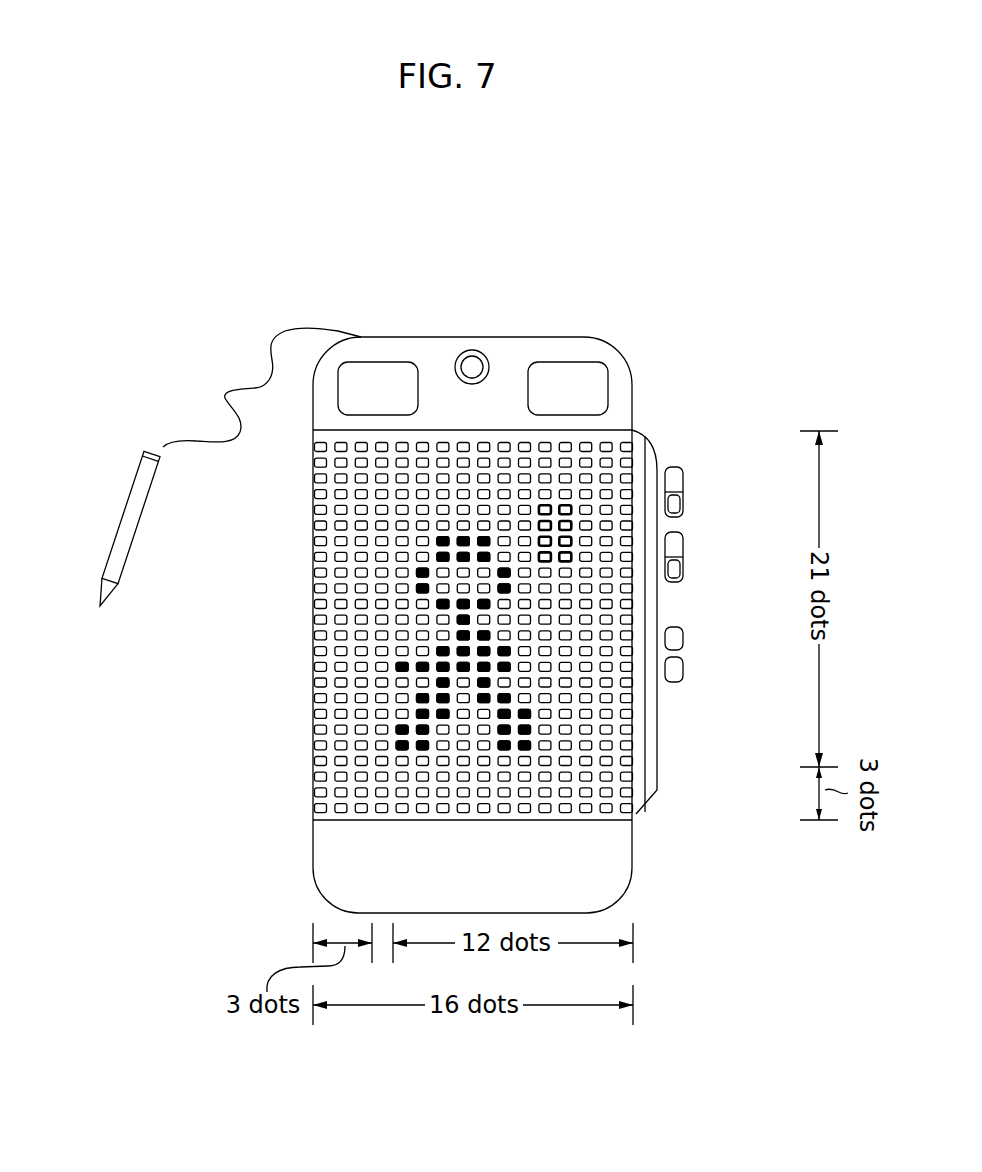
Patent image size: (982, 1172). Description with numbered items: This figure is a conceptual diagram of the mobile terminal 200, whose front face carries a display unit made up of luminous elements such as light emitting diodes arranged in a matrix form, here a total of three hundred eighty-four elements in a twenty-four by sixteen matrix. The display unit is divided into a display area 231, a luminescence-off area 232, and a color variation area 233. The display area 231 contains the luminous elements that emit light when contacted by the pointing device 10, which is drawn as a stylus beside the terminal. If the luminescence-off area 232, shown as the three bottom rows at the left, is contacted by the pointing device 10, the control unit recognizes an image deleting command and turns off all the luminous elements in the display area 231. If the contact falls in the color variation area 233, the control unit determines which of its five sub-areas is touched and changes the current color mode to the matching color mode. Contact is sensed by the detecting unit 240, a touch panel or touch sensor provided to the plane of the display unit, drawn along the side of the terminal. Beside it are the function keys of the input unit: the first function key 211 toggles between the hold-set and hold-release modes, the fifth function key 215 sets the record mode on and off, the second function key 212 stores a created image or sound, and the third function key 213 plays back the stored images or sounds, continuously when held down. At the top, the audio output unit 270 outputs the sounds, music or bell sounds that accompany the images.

The mobile terminal 200 is at (322, 266).
The pointing device 10 is at (128, 514).
The audio output unit 270 is at (398, 362).
The detecting unit 240 is at (638, 444).
The fifth function key 215 is at (683, 481).
The first function key 211 is at (683, 547).
The second function key 212 is at (683, 640).
The third function key 213 is at (683, 669).
The display area 231 is at (297, 433).
The luminescence-off area 232 is at (363, 825).
The color variation area 233 is at (623, 866).